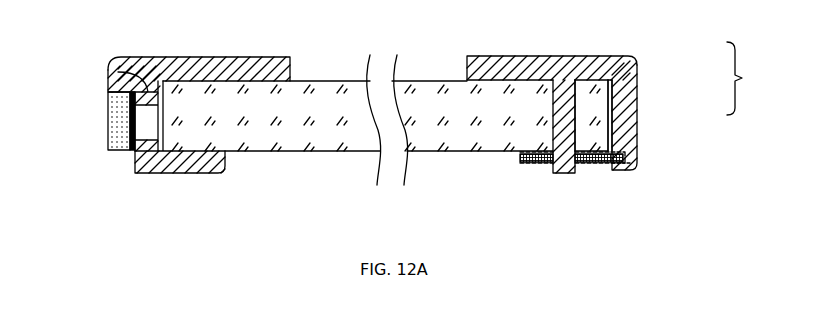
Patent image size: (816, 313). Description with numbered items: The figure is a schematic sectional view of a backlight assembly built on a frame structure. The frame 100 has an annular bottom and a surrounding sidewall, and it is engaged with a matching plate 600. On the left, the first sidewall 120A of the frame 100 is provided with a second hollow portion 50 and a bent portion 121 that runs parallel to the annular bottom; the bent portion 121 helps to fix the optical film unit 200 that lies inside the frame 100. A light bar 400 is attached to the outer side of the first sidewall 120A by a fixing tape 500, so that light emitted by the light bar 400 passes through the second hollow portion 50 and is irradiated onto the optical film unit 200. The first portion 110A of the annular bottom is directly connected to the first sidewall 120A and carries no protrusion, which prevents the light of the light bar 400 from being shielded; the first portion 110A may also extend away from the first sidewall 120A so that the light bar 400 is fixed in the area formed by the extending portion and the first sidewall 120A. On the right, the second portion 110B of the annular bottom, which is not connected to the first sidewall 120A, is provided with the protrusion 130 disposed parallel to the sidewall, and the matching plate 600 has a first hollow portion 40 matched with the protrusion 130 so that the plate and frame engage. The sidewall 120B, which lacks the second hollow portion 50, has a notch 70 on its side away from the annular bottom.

The frame 100 is at (753, 78).
The first portion 110A is at (177, 57).
The second portion 110B is at (587, 55).
The first sidewall 120A is at (108, 79).
The sidewall 120B is at (637, 100).
The bent portion 121 is at (177, 168).
The protrusion 130 is at (560, 103).
The optical film unit 200 is at (347, 81).
The light bar 400 is at (110, 98).
The fixing tape 500 is at (110, 130).
The second hollow portion 50 is at (152, 122).
The matching plate 600 is at (520, 157).
The first hollow portion 40 is at (560, 170).
The notch 70 is at (607, 170).